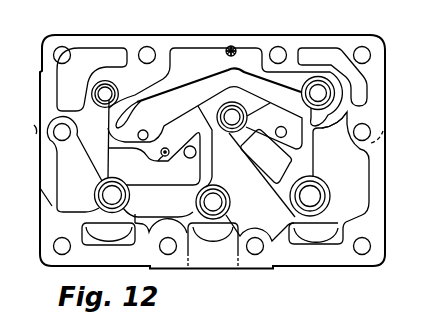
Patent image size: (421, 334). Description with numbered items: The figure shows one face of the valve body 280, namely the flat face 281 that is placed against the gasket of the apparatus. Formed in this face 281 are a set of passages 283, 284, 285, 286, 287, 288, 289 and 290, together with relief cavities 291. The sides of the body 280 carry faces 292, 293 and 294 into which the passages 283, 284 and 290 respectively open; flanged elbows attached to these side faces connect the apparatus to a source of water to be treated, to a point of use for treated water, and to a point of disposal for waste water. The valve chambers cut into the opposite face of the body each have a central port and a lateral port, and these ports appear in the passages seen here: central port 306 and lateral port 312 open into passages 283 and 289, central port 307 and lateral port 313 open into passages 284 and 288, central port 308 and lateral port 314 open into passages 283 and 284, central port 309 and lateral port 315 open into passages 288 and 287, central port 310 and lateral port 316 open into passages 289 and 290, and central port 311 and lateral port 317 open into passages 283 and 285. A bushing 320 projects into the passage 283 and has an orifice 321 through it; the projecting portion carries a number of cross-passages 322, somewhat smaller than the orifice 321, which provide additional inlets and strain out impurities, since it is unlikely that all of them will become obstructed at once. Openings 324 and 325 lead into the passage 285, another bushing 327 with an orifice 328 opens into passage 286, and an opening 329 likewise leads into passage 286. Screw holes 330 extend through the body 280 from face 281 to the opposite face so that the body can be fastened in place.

The valve body 280 is at (368, 36).
The flat face 281 is at (75, 39).
The passage 283 is at (194, 130).
The passage 284 is at (341, 167).
The passage 285 is at (205, 108).
The passage 286 is at (154, 159).
The passage 287 is at (266, 157).
The passage 288 is at (233, 161).
The passage 289 is at (158, 220).
The passage 290 is at (270, 234).
The relief cavities 291 is at (212, 79).
The side face 292 is at (40, 137).
The side face 293 is at (384, 123).
The side face 294 is at (253, 269).
The central port 306 is at (112, 195).
The central port 307 is at (310, 196).
The central port 308 is at (318, 93).
The central port 309 is at (232, 117).
The central port 310 is at (213, 202).
The central port 311 is at (105, 94).
The lateral port 312 is at (108, 229).
The lateral port 313 is at (317, 233).
The lateral port 314 is at (320, 128).
The lateral port 315 is at (252, 149).
The lateral port 316 is at (213, 238).
The lateral port 317 is at (136, 99).
The bushing 320 is at (230, 46).
The orifice 321 is at (235, 47).
The cross-passages 322 is at (225, 48).
The opening 324 is at (280, 126).
The opening 325 is at (142, 130).
The bushing 327 is at (168, 149).
The orifice 328 is at (161, 153).
The opening 329 is at (186, 158).
The screw holes 330 is at (56, 48).